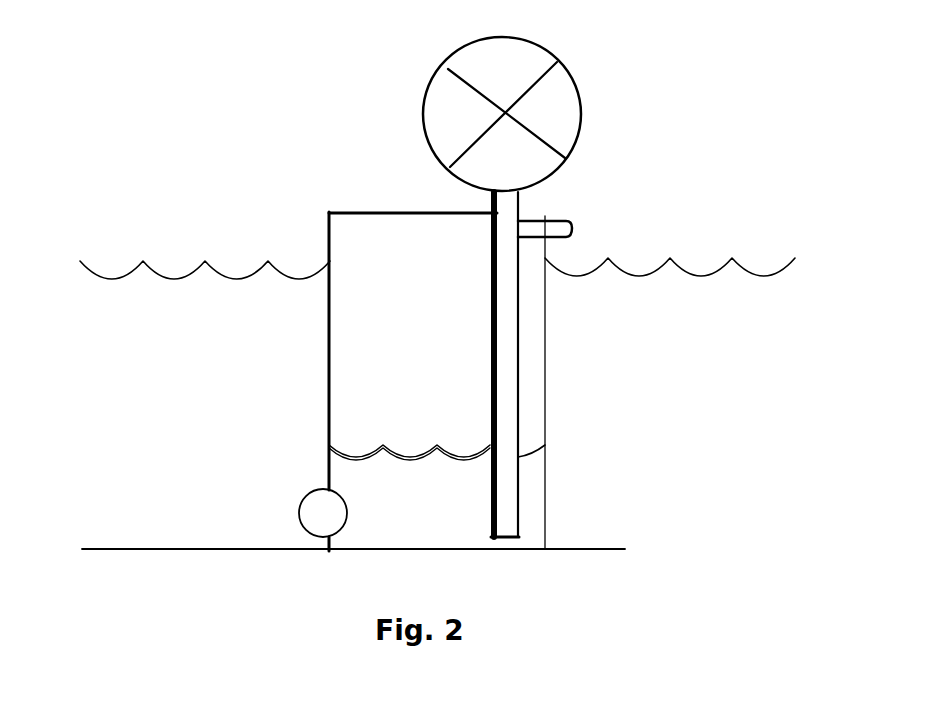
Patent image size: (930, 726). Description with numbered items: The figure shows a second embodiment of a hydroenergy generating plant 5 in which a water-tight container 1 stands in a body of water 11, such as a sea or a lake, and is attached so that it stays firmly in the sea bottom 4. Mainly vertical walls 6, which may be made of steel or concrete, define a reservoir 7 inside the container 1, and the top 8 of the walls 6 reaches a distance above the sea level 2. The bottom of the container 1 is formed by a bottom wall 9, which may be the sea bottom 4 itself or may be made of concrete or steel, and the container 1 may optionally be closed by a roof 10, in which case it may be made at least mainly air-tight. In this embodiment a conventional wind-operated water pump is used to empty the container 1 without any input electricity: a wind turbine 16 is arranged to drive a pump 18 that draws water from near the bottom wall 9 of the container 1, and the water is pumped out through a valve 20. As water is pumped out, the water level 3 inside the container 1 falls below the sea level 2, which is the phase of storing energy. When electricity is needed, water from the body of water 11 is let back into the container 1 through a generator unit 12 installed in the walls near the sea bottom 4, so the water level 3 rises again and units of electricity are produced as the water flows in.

The container 1 is at (381, 356).
The sea level 2 is at (97, 277).
The water level 3 is at (387, 447).
The sea bottom 4 is at (103, 551).
The hydroenergy generating plant 5 is at (703, 139).
The walls 6 is at (328, 380).
The reservoir 7 is at (430, 343).
The top of the walls 8 is at (545, 221).
The bottom wall 9 is at (382, 549).
The roof 10 is at (388, 211).
The body of water 11 is at (141, 414).
The generator unit 12 is at (298, 512).
The wind turbine 16 is at (582, 127).
The pump 18 is at (518, 525).
The valve 20 is at (572, 234).